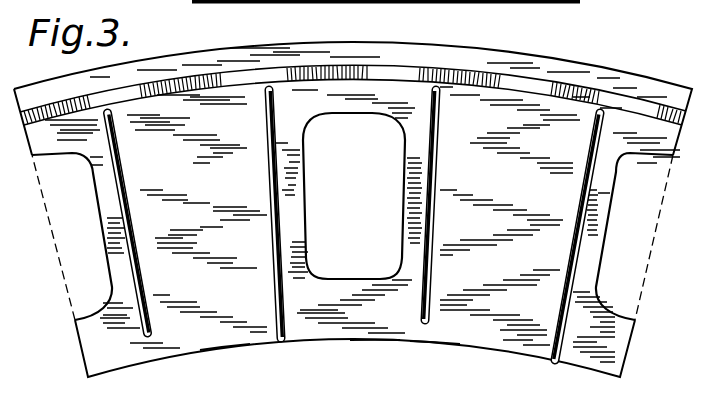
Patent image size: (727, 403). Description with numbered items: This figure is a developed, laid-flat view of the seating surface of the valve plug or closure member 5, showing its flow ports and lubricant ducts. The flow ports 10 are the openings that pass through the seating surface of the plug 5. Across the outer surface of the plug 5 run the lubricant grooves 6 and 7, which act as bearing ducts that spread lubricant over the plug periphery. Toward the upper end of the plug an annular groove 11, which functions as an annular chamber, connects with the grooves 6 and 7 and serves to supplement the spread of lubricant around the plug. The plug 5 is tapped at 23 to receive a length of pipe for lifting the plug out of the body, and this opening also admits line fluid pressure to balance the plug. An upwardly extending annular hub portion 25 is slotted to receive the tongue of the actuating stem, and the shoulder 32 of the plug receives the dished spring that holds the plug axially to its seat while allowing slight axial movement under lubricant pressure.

The valve plug 5 is at (524, 358).
The lubricant groove 6 is at (127, 194).
The lubricant groove 7 is at (270, 185).
The recess opening 10 is at (337, 257).
The annular groove 11 is at (617, 100).
The tapped opening 23 is at (371, 401).
The annular hub portion 25 is at (225, 373).
The plug shoulder 32 is at (410, 402).